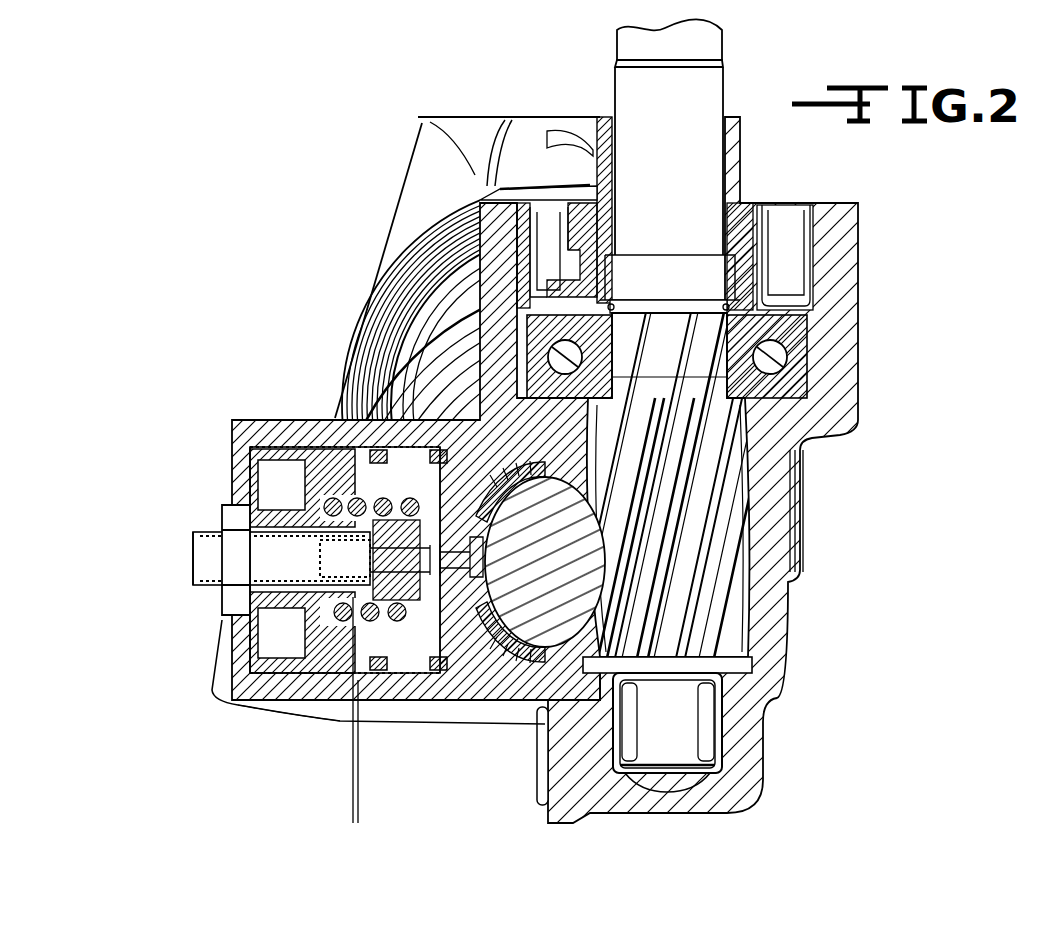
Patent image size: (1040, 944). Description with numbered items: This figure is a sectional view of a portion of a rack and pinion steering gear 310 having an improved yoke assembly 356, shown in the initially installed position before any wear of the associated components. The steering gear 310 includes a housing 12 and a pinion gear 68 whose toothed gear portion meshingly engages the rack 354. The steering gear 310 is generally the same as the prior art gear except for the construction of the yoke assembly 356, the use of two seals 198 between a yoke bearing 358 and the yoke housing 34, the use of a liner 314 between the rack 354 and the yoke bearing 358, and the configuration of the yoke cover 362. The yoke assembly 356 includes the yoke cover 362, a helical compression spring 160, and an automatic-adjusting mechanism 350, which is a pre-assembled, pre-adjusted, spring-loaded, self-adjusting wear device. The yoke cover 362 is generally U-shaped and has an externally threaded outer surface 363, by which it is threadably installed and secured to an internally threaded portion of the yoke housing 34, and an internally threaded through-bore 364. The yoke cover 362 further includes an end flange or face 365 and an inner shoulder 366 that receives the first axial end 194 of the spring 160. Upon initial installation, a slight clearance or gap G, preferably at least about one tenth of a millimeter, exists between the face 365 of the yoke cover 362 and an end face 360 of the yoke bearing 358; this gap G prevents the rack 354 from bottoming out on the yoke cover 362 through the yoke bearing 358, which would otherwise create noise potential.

The rack and pinion steering gear 310 is at (233, 222).
The housing 12 is at (764, 774).
The pinion gear 68 is at (690, 472).
The spring 160 is at (337, 407).
The rack 354 is at (567, 552).
The liner 314 is at (513, 467).
The first axial end of the spring 194 is at (320, 540).
The seals 198 is at (430, 625).
The automatic-adjusting mechanism 350 is at (209, 599).
The internally threaded through-bore 364 is at (340, 575).
The inner shoulder 366 is at (323, 535).
The end face of the yoke bearing 360 is at (335, 630).
The yoke cover 362 is at (275, 500).
The externally threaded outer surface 363 is at (283, 447).
The end flange or face 365 is at (338, 414).
The yoke assembly 356 is at (228, 724).
The yoke housing 34 is at (305, 690).
The yoke bearing 358 is at (490, 680).
The gap G is at (310, 813).